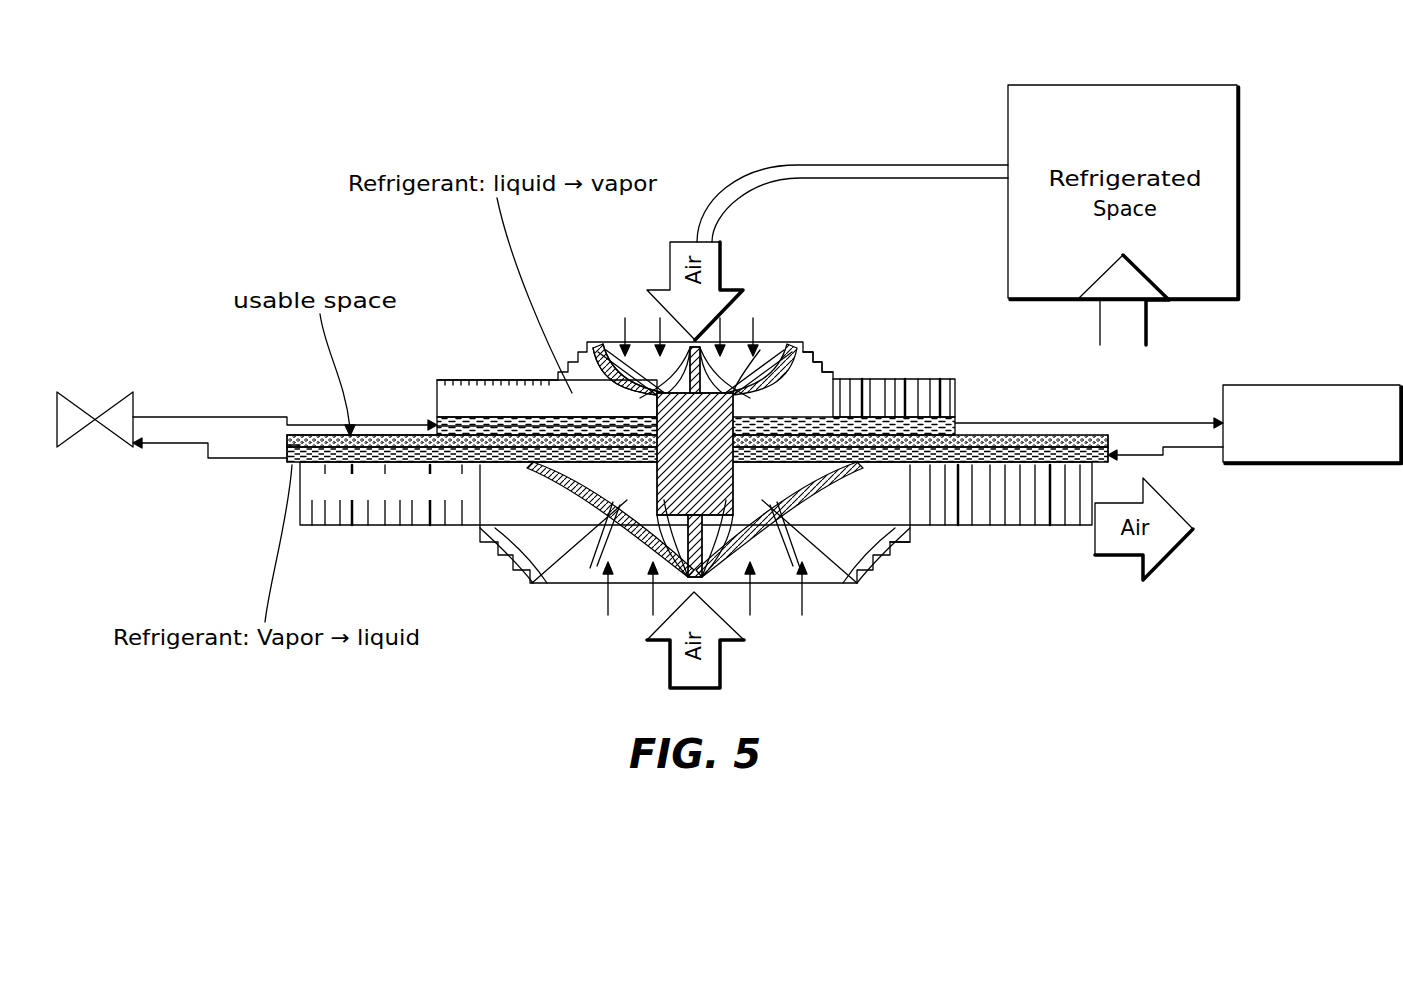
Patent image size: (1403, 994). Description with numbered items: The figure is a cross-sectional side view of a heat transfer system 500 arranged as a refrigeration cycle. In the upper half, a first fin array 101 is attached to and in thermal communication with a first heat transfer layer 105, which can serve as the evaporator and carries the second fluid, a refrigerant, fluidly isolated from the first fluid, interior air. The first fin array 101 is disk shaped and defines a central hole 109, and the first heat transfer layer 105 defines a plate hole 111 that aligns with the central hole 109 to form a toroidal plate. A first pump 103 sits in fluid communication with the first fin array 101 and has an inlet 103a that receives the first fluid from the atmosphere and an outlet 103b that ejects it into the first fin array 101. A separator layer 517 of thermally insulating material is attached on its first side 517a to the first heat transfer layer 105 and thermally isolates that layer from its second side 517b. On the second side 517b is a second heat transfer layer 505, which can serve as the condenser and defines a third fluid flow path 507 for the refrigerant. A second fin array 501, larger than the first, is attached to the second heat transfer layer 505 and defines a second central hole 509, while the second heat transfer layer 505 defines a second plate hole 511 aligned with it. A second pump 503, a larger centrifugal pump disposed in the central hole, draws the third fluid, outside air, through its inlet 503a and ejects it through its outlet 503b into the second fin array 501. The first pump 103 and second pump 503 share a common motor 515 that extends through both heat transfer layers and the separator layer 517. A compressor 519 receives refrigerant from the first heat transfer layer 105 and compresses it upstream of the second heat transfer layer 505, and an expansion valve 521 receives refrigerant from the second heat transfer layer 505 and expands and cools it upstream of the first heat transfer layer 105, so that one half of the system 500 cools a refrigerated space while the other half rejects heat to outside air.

The system 500 is at (313, 249).
The first fin array 101 is at (458, 380).
The first pump 103 is at (566, 372).
The inlet 103a is at (617, 347).
The outlet 103b is at (822, 373).
The first heat transfer layer 105 is at (433, 423).
The central hole 109 is at (583, 420).
The plate hole 111 is at (773, 362).
The second fin array 501 is at (363, 524).
The second pump 503 is at (555, 585).
The inlet 503a is at (630, 580).
The outlet 503b is at (888, 508).
The second heat transfer layer 505 is at (288, 466).
The third fluid flow path 507 is at (1085, 455).
The second central hole 509 is at (905, 482).
The second plate hole 511 is at (745, 462).
The common motor 515 is at (674, 457).
The separator layer 517 is at (307, 437).
The first side 517a is at (322, 437).
The second side 517b is at (287, 446).
The compressor 519 is at (1282, 452).
The expansion valve 521 is at (120, 434).